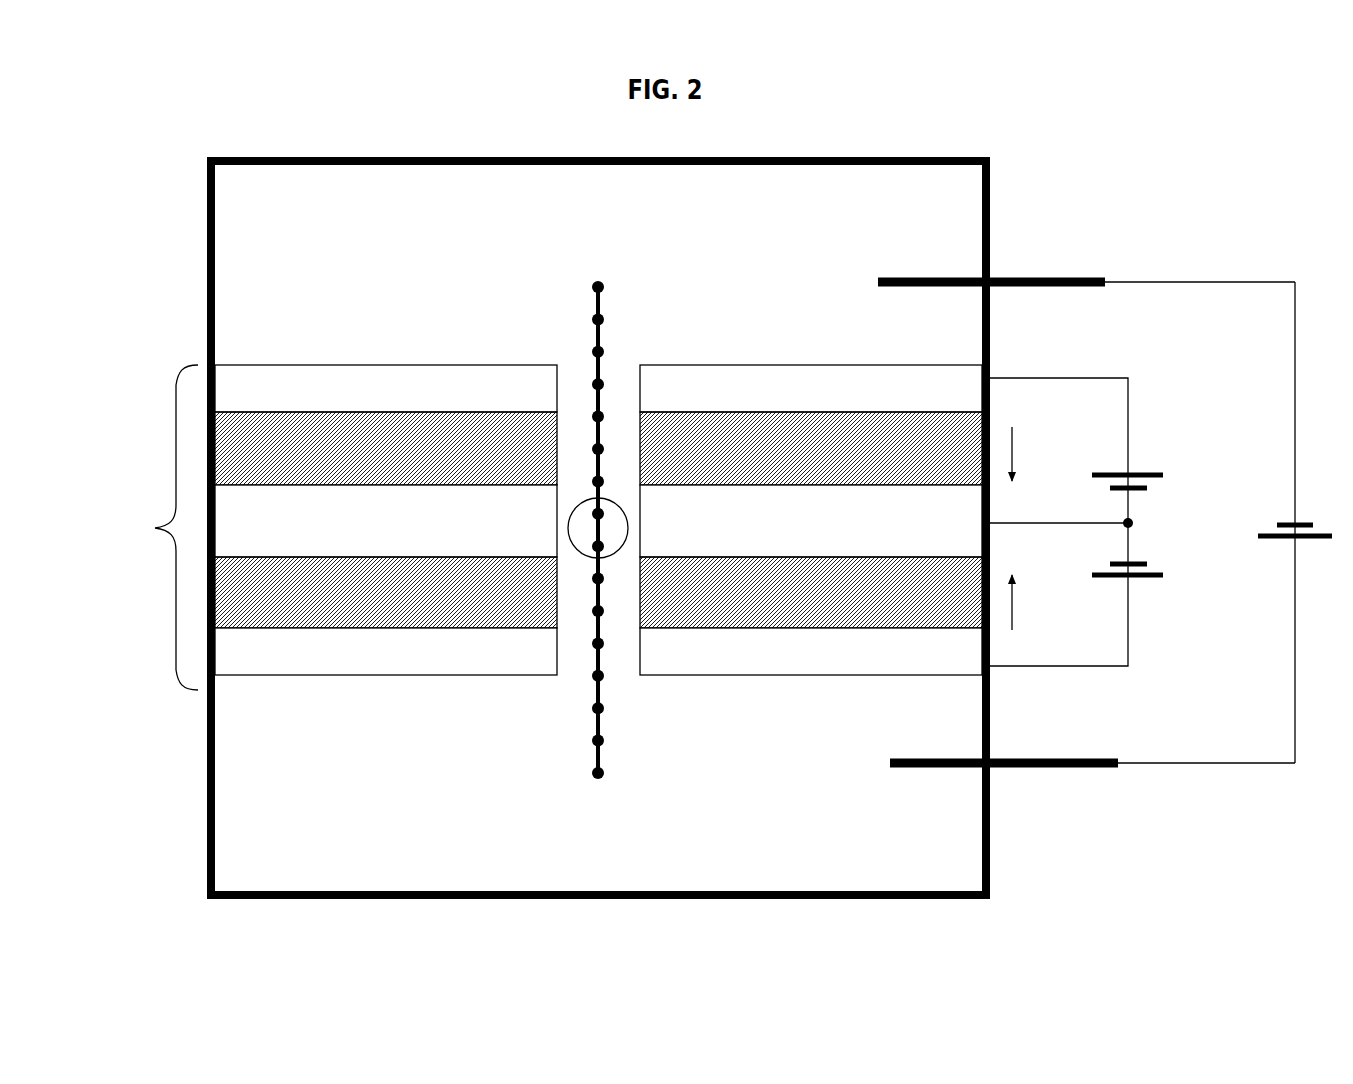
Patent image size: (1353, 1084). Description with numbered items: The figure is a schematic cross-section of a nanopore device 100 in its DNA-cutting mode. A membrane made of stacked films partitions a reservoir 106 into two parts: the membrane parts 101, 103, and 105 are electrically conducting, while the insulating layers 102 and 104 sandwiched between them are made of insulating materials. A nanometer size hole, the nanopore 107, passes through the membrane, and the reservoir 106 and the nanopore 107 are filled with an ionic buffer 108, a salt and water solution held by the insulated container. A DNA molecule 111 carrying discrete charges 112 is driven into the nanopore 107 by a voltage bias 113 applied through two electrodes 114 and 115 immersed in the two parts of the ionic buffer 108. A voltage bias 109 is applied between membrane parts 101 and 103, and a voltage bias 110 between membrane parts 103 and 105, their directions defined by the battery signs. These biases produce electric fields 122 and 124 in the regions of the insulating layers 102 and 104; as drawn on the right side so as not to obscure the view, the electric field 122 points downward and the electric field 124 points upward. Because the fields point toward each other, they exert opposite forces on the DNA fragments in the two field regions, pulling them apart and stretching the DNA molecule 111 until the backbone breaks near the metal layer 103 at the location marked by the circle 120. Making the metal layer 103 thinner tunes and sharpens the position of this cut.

The device 100 is at (1107, 150).
The membrane part 101 is at (598, 388).
The insulating layer 102 is at (268, 437).
The metal layer 103 is at (598, 521).
The insulating layer 104 is at (478, 595).
The membrane part 105 is at (598, 651).
The reservoir 106 is at (992, 835).
The nanopore 107 is at (632, 359).
The ionic buffer 108 is at (598, 528).
The voltage bias 109 is at (1167, 462).
The voltage bias 110 is at (1170, 562).
The DNA molecule 111 is at (584, 316).
The discrete charges 112 is at (580, 771).
The voltage bias 113 is at (1282, 545).
The electrode 114 is at (1012, 270).
The electrode 115 is at (1050, 752).
The location of the cut 120 is at (768, 735).
The electric field 122 is at (1014, 460).
The electric field 124 is at (1014, 598).